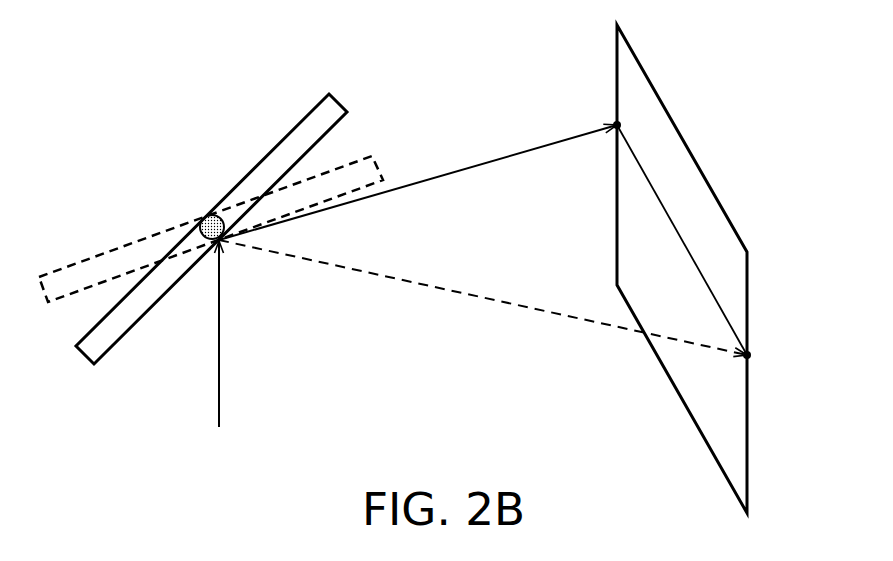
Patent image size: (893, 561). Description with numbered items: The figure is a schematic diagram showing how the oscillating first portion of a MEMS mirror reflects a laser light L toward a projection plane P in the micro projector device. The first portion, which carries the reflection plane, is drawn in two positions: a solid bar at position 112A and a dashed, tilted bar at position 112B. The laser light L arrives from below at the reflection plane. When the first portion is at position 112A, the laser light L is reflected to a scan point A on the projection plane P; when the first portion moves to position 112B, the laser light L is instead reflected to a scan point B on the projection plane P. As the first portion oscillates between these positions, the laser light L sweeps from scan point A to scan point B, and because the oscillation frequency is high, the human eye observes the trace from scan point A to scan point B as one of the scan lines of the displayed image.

The position of the first portion of the MEMS mirror 112A is at (340, 106).
The position of the first portion of the MEMS mirror 112B is at (378, 167).
The laser light L is at (223, 351).
The projection plane P is at (684, 402).
The scan point A is at (620, 122).
The scan point B is at (751, 352).